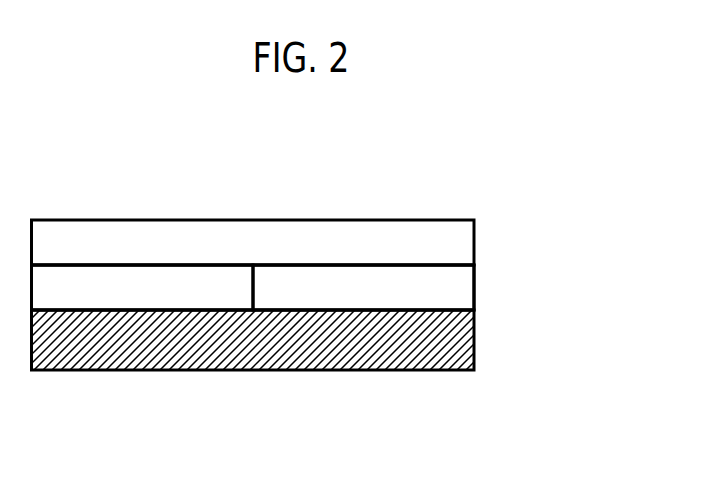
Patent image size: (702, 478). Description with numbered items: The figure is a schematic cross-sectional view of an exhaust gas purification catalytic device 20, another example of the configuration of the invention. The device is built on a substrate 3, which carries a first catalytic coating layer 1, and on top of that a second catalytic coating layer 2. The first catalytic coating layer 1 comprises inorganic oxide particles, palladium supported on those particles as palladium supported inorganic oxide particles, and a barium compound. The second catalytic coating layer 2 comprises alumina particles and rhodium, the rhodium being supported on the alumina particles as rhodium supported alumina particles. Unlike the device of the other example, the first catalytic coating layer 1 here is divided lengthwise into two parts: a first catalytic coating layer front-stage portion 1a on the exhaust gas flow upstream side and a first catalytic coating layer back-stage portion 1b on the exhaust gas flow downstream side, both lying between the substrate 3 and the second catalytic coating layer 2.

The exhaust gas purification catalytic device 20 is at (450, 176).
The second catalytic coating layer 2 is at (455, 228).
The first catalytic coating layer 1 is at (557, 225).
The first catalytic coating layer front-stage portion 1a is at (223, 273).
The first catalytic coating layer back-stage portion 1b is at (462, 298).
The substrate 3 is at (455, 356).